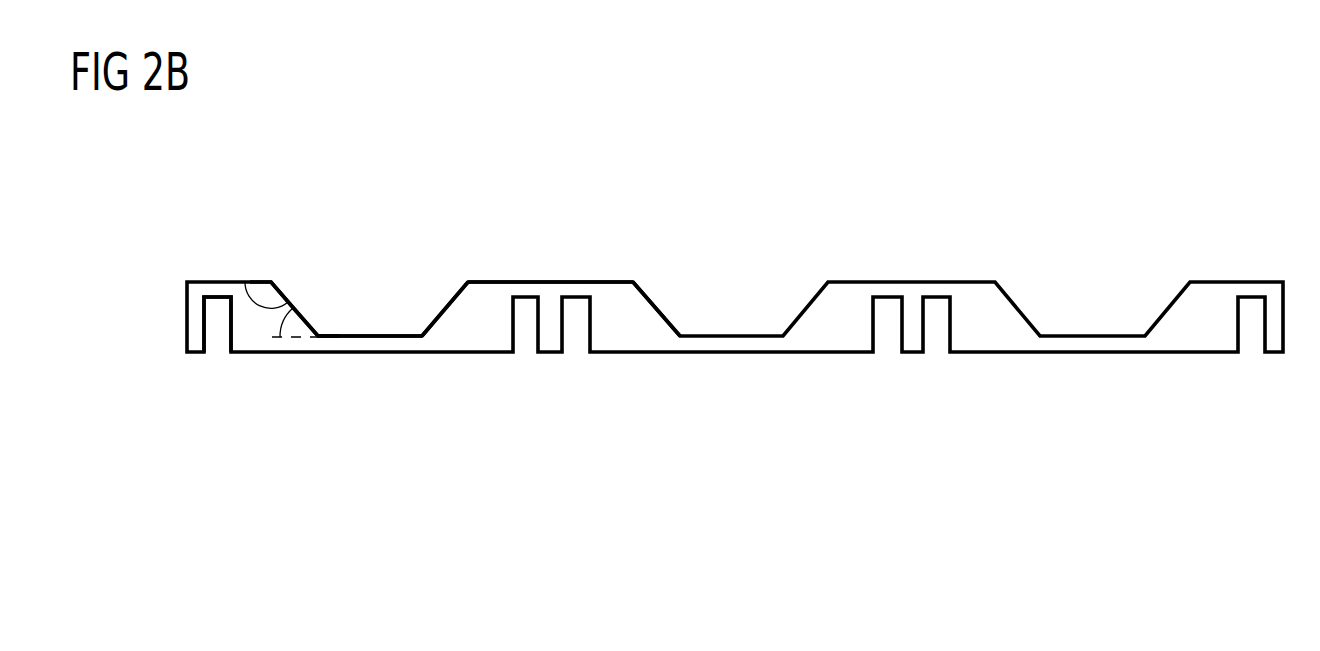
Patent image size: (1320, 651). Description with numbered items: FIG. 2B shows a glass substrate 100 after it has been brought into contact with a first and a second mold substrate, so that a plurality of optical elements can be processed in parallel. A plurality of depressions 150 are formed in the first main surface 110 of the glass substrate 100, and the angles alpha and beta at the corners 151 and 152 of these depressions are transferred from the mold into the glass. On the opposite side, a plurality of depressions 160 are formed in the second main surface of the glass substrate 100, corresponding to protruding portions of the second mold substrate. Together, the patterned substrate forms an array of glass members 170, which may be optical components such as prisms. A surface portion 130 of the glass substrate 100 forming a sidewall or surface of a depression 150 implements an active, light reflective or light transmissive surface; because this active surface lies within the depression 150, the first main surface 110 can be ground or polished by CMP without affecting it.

The glass substrate 100 is at (197, 315).
The depressions 160 is at (218, 338).
The corner 151 is at (263, 284).
The corner 152 is at (318, 340).
The depressions 150 is at (387, 303).
The first main surface 110 is at (441, 315).
The glass members 170 is at (475, 295).
The surface portion 130 is at (646, 295).